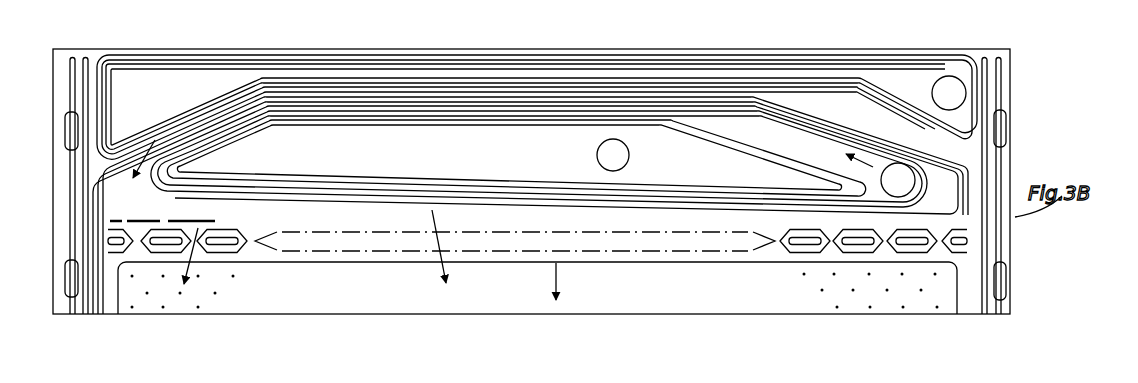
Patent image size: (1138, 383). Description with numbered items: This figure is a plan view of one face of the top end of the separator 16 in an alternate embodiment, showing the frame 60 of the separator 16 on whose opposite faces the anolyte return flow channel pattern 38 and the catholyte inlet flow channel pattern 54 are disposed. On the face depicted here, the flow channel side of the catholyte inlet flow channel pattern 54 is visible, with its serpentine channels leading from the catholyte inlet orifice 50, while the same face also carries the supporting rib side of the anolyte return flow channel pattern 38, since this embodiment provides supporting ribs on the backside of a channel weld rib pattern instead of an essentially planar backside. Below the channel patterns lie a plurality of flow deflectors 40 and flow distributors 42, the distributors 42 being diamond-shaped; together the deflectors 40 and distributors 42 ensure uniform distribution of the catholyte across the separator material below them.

The separator 16 is at (1052, 103).
The anolyte return flow channel pattern 38 is at (875, 98).
The flow deflectors 40 is at (215, 221).
The flow distributors 42 is at (222, 250).
The catholyte inlet orifice 50 is at (923, 186).
The catholyte inlet flow channel pattern 54 is at (735, 143).
The frame 60 is at (1012, 62).